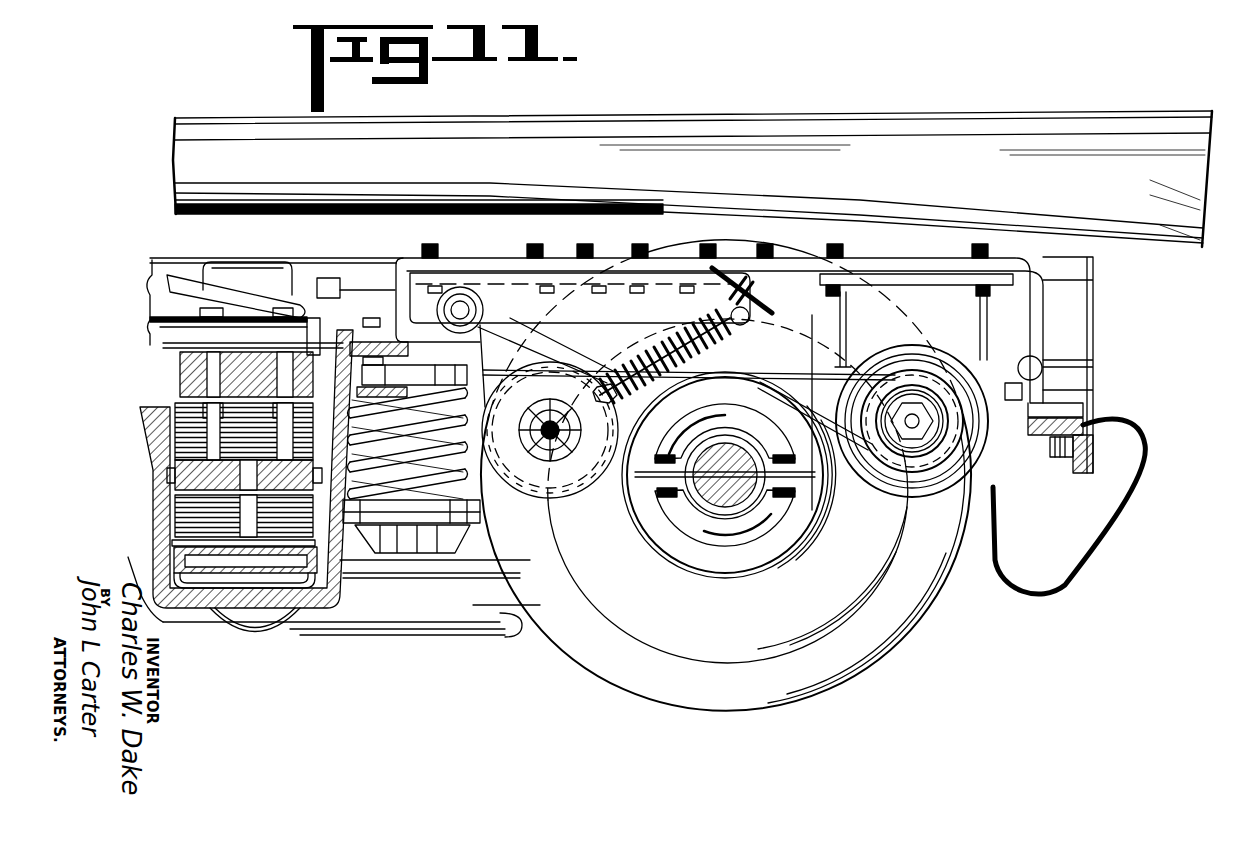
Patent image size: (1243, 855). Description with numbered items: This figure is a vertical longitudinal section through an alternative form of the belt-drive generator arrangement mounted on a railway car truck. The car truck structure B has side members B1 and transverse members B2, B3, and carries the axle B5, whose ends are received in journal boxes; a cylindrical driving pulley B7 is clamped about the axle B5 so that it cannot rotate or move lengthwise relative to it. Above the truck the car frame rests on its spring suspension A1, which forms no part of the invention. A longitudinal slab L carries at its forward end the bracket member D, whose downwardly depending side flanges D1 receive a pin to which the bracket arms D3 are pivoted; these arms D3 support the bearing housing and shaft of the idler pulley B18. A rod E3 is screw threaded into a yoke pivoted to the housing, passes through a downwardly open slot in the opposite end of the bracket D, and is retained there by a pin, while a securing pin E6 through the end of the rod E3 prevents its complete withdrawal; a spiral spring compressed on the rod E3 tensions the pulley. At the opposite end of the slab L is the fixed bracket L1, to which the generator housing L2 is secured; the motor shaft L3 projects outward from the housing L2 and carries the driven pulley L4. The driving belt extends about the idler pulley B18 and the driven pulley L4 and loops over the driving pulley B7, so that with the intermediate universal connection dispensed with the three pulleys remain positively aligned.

The car truck structure B is at (867, 637).
The side member B1 is at (307, 267).
The transverse member B2 is at (355, 335).
The transverse member B3 is at (1073, 440).
The axle B5 is at (723, 490).
The driving pulley B7 is at (670, 537).
The idler pulley B18 is at (582, 477).
The spring suspension A1 is at (403, 477).
The bracket member D is at (552, 263).
The side flange D1 is at (612, 265).
The bracket arm D3 is at (512, 358).
The longitudinal slab L is at (492, 263).
The fixed bracket L1 is at (921, 305).
The generator housing L2 is at (927, 488).
The motor shaft L3 is at (967, 457).
The driven pulley L4 is at (888, 458).
The rod E3 is at (763, 300).
The securing pin E6 is at (778, 285).